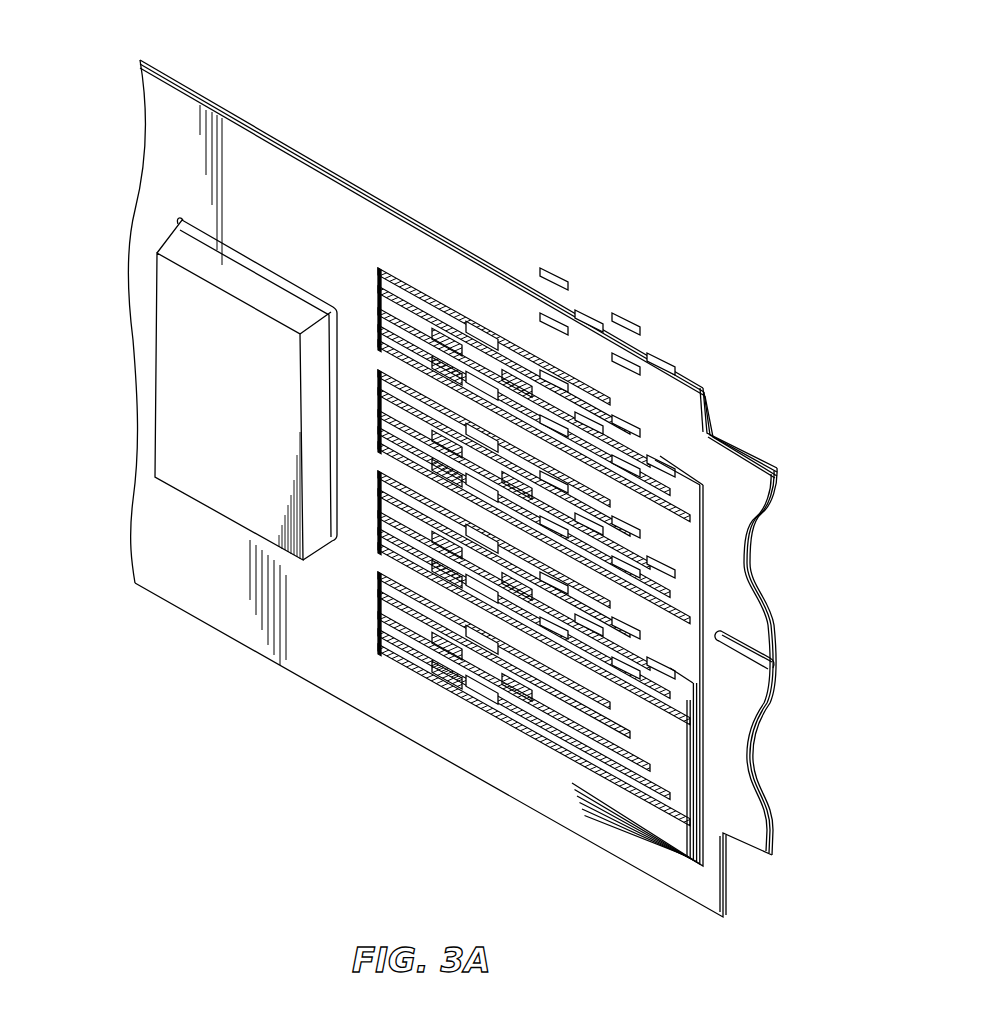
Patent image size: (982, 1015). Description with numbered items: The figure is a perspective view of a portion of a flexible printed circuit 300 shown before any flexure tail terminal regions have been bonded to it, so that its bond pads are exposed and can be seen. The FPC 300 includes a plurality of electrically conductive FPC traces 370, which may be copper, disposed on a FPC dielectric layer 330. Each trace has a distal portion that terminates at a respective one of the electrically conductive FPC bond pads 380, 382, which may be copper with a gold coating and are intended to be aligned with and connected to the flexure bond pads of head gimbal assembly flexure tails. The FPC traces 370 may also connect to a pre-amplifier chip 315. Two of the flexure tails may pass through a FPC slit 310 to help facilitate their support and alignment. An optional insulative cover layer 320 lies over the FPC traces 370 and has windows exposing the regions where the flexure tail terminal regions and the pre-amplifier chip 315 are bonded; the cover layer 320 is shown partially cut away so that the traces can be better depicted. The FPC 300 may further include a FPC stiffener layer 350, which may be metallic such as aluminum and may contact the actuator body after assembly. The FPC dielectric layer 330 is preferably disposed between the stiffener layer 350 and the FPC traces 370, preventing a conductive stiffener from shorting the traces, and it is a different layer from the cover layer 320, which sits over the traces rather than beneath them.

The flexible printed circuit 300 is at (463, 62).
The FPC slit 310 is at (776, 664).
The pre-amplifier chip 315 is at (190, 372).
The insulative cover layer 320 is at (205, 600).
The FPC dielectric layer 330 is at (738, 468).
The FPC stiffener layer 350 is at (728, 428).
The FPC traces 370 is at (516, 455).
The FPC bond pads 380 is at (410, 330).
The FPC bond pads 382 is at (366, 345).